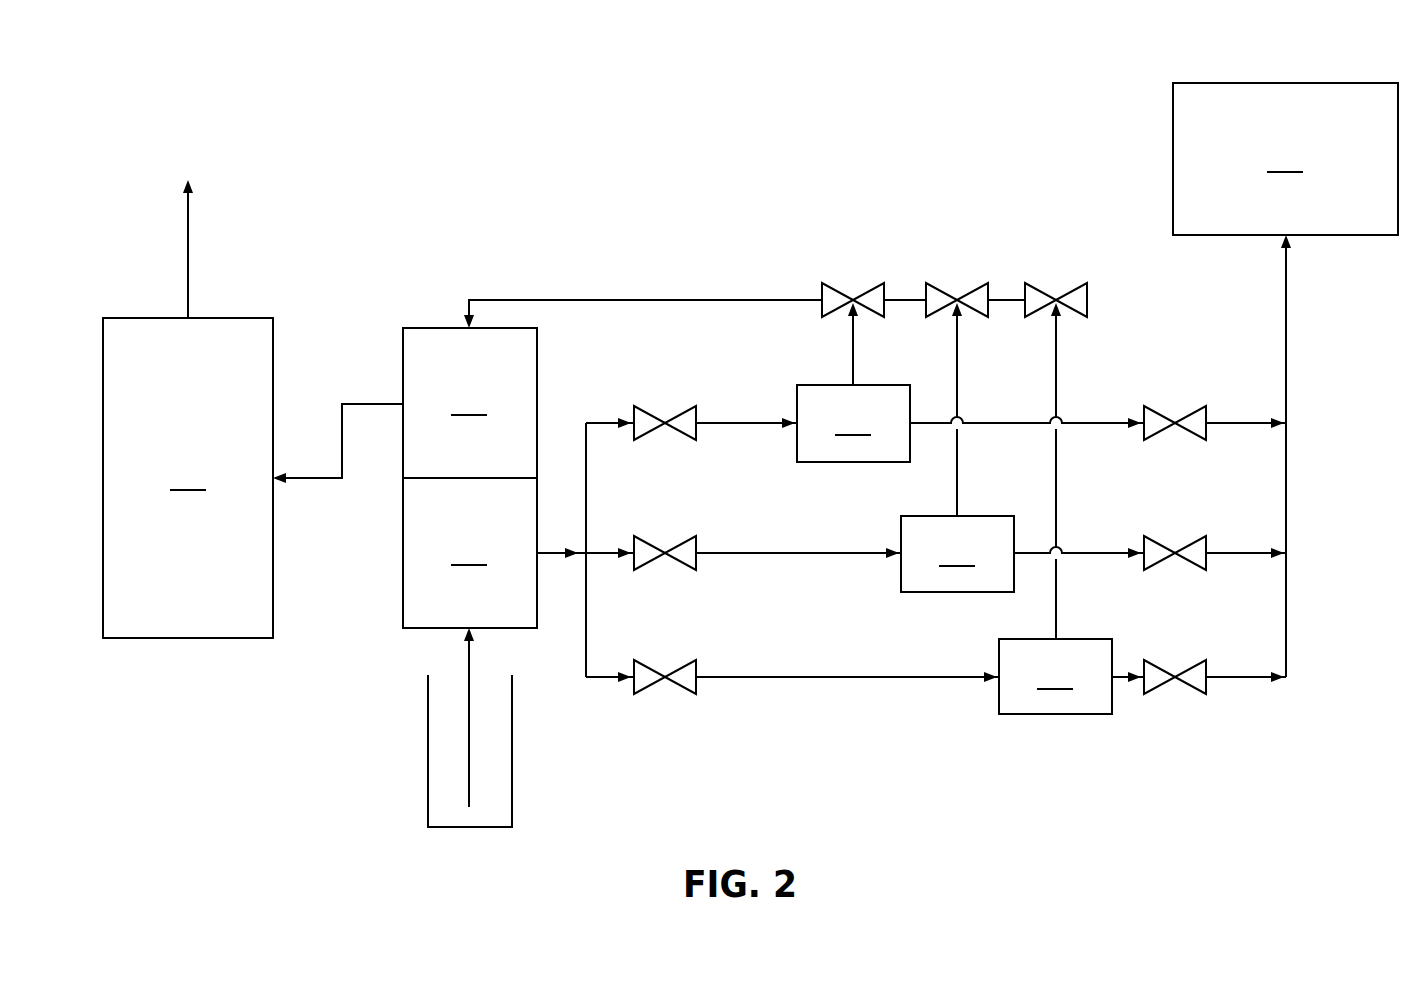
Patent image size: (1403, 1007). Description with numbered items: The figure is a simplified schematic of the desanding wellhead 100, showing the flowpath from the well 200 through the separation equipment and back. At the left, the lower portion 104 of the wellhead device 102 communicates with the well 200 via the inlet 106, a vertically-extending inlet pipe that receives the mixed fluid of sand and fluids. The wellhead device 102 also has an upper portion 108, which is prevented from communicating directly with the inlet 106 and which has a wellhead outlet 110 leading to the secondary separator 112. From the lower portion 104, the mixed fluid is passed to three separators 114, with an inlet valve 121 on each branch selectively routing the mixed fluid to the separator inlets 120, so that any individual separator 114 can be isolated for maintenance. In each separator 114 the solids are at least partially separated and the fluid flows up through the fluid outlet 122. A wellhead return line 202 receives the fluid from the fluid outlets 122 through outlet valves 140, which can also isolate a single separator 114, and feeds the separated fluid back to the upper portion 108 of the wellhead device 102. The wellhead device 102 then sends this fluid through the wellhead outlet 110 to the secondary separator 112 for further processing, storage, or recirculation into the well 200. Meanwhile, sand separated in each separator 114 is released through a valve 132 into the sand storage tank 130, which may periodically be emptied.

The desanding wellhead 100 is at (360, 36).
The wellhead device 102 is at (410, 284).
The lower portion 104 is at (494, 553).
The inlet 106 is at (469, 663).
The upper portion 108 is at (470, 403).
The wellhead outlet 110 is at (372, 403).
The secondary separator 112 is at (188, 409).
The separator 114 is at (954, 549).
The separator inlet 120 is at (740, 420).
The inlet valve 121 is at (655, 410).
The fluid outlet 122 is at (853, 367).
The sand storage tank 130 is at (1285, 380).
The valve 132 is at (1190, 410).
The outlet valve 140 is at (880, 285).
The well 200 is at (428, 780).
The wellhead return line 202 is at (718, 298).